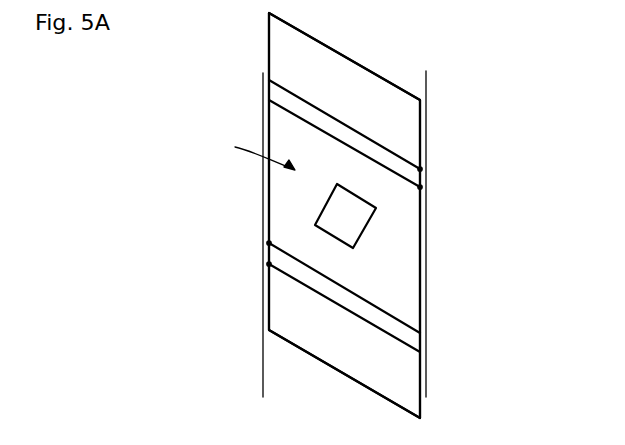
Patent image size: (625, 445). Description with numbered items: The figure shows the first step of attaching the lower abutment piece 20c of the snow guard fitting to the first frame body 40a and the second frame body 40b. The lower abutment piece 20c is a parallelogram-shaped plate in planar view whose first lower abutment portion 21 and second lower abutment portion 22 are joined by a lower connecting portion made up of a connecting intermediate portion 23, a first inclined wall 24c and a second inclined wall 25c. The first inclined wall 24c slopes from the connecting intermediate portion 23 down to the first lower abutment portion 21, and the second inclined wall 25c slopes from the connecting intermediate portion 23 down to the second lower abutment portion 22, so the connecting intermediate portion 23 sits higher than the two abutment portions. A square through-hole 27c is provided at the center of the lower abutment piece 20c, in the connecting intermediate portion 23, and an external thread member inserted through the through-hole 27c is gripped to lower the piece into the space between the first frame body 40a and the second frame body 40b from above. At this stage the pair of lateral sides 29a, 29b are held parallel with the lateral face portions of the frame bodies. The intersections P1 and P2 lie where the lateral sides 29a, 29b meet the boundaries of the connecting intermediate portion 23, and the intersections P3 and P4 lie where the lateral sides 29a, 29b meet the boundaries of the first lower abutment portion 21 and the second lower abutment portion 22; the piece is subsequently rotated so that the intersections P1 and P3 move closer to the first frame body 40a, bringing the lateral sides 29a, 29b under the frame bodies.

The first lower abutment portion 21 is at (407, 373).
The second lower abutment portion 22 is at (276, 47).
The connecting intermediate portion 23 is at (398, 287).
The first frame body 40a is at (250, 368).
The second frame body 40b is at (435, 88).
The lateral side 29a is at (265, 209).
The lateral side 29b is at (423, 198).
The second inclined wall 25c is at (357, 143).
The first inclined wall 24c is at (328, 288).
The through-hole 27c is at (335, 237).
The lower abutment piece 20c is at (250, 143).
The intersection P1 is at (282, 229).
The intersection P2 is at (406, 202).
The intersection P3 is at (250, 277).
The intersection P4 is at (436, 161).